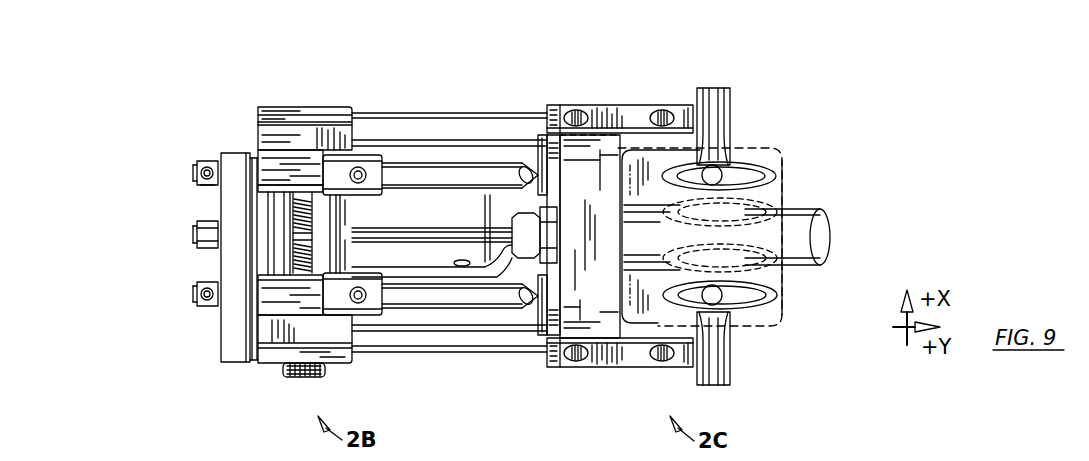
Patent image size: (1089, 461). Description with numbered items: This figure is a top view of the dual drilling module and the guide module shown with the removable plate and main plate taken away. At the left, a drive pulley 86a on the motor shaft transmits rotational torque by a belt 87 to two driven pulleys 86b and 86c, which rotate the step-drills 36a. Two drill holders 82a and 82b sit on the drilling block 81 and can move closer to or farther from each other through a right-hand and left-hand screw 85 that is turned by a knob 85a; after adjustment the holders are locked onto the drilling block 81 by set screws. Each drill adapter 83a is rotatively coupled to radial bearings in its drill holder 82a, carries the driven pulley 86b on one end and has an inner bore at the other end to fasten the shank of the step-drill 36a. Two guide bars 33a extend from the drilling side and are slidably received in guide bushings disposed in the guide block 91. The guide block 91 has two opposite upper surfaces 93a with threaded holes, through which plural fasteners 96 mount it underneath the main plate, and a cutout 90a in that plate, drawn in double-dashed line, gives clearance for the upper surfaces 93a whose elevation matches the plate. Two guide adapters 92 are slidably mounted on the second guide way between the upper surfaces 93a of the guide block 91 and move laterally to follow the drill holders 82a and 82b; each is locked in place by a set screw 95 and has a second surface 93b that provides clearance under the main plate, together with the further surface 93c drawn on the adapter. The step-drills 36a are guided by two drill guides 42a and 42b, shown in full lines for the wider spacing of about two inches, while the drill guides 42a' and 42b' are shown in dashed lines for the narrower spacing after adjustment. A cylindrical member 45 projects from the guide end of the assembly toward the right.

The drilling block 81 is at (262, 352).
The drill holder 82a is at (277, 172).
The drill holder 82b is at (272, 302).
The drill adapter 83a is at (361, 155).
The right-hand and left-hand screw 85 is at (317, 268).
The knob 85a is at (290, 378).
The pulley 86a is at (203, 250).
The driven pulley 86b is at (201, 160).
The driven pulley 86c is at (200, 308).
The belt 87 is at (218, 206).
The step-drill 36a is at (456, 160).
The guide adapter 92 is at (546, 163).
The guide bar 33a is at (540, 162).
The set screw 95 is at (548, 150).
The fastener 96 is at (576, 110).
The guide block 91 is at (617, 368).
The upper surface 93a is at (680, 162).
The second surface 93b is at (637, 110).
The post 93c is at (666, 142).
The drill guide 42a is at (755, 159).
The drill guide 42a' is at (757, 199).
The drill guide 42b is at (755, 310).
The drill guide 42b' is at (758, 272).
The cylinder 45 is at (828, 242).
The cutout 90a is at (785, 332).